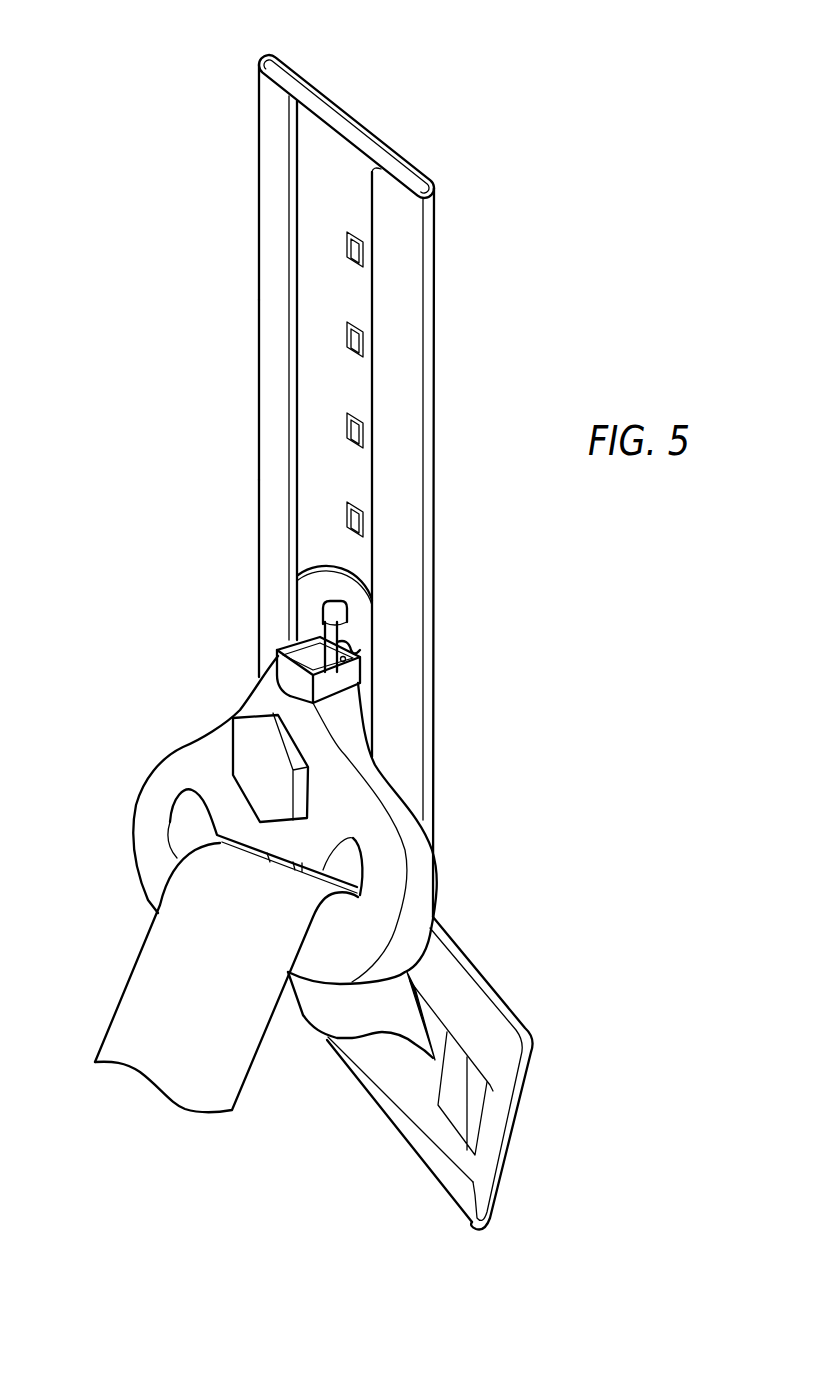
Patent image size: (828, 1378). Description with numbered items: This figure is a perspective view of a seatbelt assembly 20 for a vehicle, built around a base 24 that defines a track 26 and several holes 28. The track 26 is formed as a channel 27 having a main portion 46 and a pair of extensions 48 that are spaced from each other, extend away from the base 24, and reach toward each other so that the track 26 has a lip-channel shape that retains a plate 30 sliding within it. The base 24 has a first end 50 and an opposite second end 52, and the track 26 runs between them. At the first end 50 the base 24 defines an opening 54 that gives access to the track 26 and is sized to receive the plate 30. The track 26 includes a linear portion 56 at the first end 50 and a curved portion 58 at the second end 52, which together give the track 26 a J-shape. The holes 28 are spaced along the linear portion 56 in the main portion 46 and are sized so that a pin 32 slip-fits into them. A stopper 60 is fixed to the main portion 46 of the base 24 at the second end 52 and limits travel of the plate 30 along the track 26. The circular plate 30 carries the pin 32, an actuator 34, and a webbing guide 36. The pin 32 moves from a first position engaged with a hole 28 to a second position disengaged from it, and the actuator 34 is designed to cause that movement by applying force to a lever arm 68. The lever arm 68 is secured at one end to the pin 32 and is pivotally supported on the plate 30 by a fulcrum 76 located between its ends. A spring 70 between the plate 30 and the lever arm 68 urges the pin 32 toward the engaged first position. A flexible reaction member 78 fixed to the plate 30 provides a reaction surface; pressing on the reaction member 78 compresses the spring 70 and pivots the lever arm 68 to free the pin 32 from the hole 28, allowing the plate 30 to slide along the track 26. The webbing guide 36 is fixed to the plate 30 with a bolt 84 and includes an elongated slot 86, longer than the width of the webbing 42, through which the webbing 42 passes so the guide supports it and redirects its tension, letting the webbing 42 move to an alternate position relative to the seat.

The seatbelt assembly 20 is at (536, 686).
The base 24 is at (268, 465).
The track 26 is at (313, 383).
The channel 27 is at (402, 178).
The hole 28 is at (365, 252).
The plate 30 is at (312, 592).
The pin 32 is at (340, 612).
The actuator 34 is at (313, 668).
The webbing guide 36 is at (187, 755).
The webbing 42 is at (157, 975).
The main portion 46 is at (313, 193).
The extensions 48 is at (268, 265).
The first end 50 is at (268, 110).
The second end 52 is at (430, 1153).
The opening 54 is at (283, 76).
The linear portion 56 is at (268, 530).
The curved portion 58 is at (443, 950).
The stopper 60 is at (450, 1095).
The lever arm 68 is at (323, 631).
The spring 70 is at (344, 658).
The fulcrum 76 is at (352, 641).
The reaction member 78 is at (283, 673).
The bolt 84 is at (257, 752).
The slot 86 is at (190, 828).